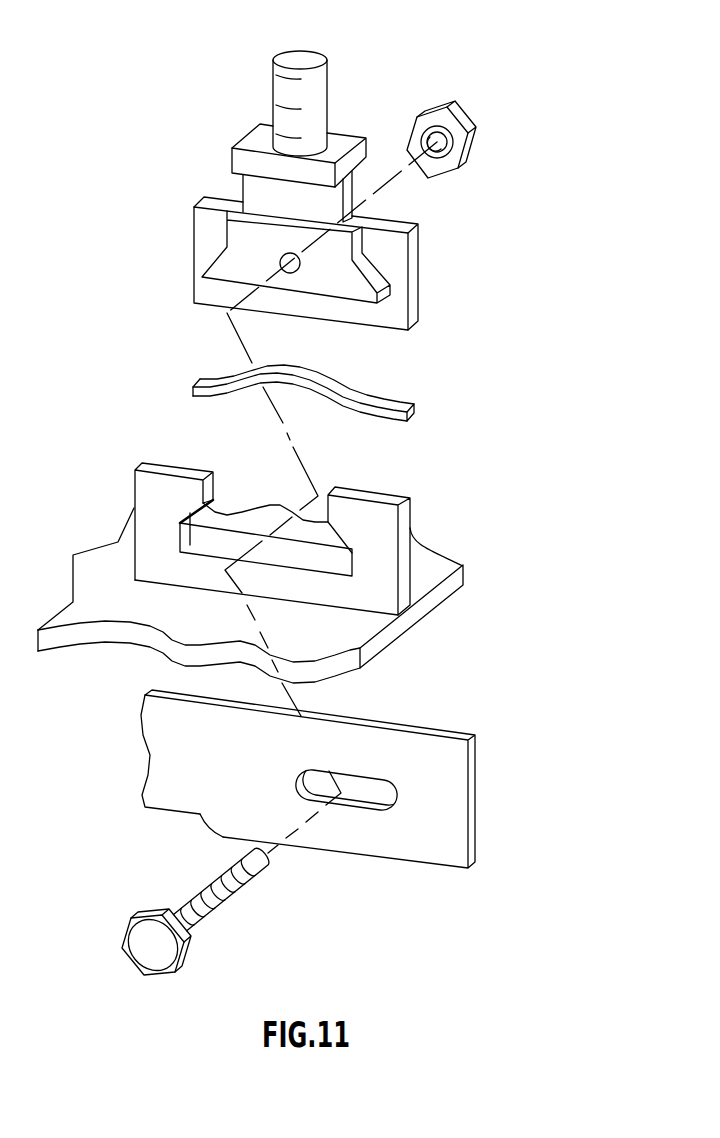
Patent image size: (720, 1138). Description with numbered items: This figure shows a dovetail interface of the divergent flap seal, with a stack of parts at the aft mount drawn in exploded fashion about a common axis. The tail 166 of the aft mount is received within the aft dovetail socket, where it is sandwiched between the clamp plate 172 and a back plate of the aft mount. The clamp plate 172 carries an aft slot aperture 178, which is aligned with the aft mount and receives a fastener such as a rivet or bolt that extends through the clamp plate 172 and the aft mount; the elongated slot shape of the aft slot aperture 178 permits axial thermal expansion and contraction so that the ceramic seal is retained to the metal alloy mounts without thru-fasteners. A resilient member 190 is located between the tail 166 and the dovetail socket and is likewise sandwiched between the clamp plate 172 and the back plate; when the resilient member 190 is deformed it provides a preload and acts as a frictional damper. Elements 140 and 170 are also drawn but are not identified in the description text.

The mounting base 140 is at (483, 553).
The tail 166 is at (213, 270).
The T-bolt 170 is at (300, 62).
The clamp plate 172 is at (480, 793).
The aft slot aperture 178 is at (363, 808).
The resilient member 190 is at (419, 408).